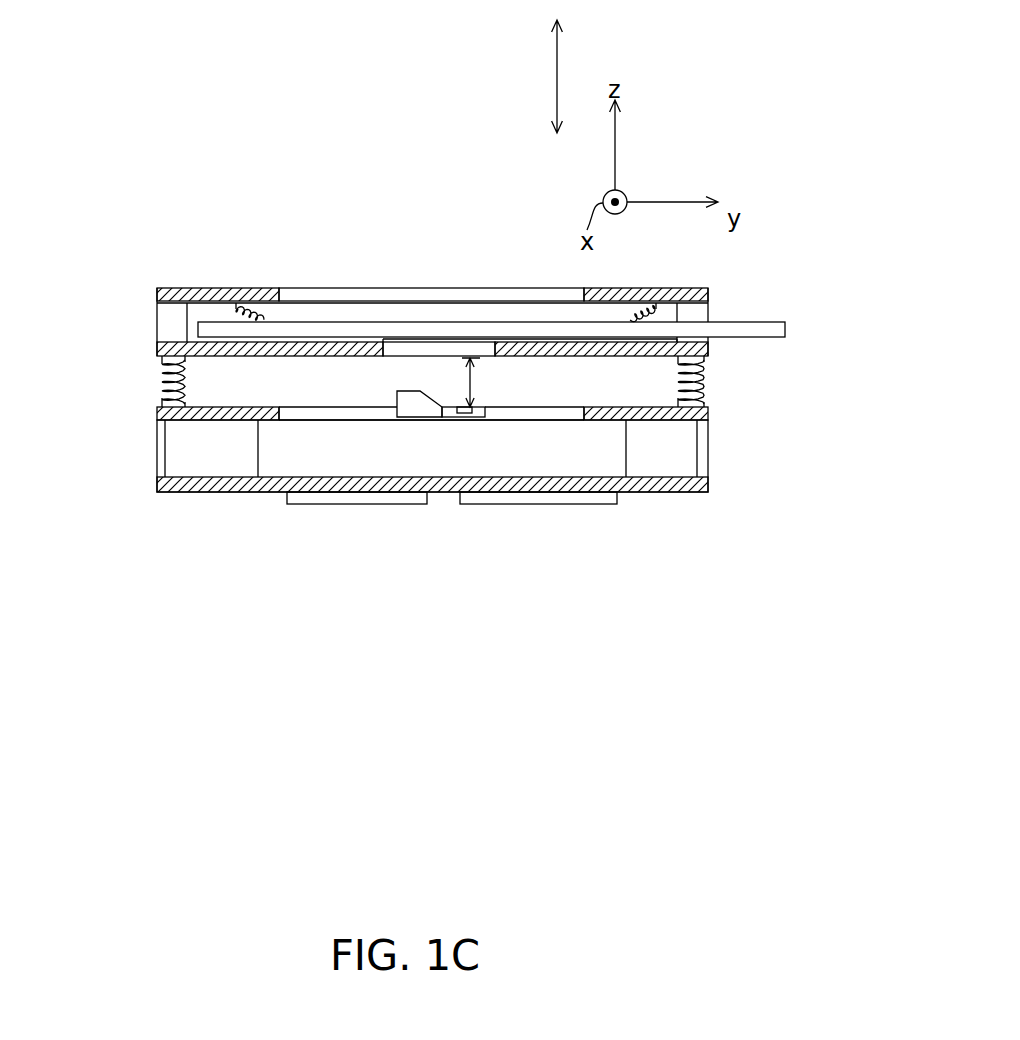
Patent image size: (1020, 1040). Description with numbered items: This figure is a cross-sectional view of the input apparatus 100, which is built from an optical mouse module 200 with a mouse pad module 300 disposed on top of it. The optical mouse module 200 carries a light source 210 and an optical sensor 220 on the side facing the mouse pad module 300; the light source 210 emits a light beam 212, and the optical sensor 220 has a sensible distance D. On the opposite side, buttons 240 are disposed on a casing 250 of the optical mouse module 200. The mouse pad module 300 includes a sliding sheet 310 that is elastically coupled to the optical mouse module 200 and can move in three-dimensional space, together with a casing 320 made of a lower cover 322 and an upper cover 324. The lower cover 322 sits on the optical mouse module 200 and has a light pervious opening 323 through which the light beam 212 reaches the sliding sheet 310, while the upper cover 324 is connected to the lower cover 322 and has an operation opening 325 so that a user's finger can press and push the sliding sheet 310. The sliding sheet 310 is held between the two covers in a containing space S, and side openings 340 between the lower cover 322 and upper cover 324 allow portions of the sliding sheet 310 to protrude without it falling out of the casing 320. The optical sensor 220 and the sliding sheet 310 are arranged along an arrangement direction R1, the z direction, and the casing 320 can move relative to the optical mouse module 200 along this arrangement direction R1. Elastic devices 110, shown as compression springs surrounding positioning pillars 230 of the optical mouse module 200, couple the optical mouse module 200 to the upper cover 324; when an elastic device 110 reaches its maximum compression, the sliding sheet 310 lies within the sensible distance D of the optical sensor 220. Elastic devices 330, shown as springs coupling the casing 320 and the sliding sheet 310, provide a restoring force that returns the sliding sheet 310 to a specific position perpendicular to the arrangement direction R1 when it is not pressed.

The input apparatus 100 is at (822, 694).
The elastic device 110 is at (157, 375).
The optical mouse module 200 is at (126, 497).
The light source 210 is at (412, 408).
The light beam 212 is at (473, 343).
The optical sensor 220 is at (465, 418).
The positioning pillar 230 is at (705, 380).
The button 240 is at (337, 498).
The casing 250 is at (652, 490).
The mouse pad module 300 is at (125, 281).
The sliding sheet 310 is at (775, 330).
The casing 320 is at (63, 320).
The lower cover 322 is at (165, 348).
The light pervious opening 323 is at (395, 343).
The upper cover 324 is at (162, 294).
The operation opening 325 is at (292, 289).
The elastic device 330 is at (243, 308).
The side opening 340 is at (706, 310).
The containing space S is at (204, 305).
The sensible distance D is at (480, 377).
The arrangement direction R1 is at (557, 68).